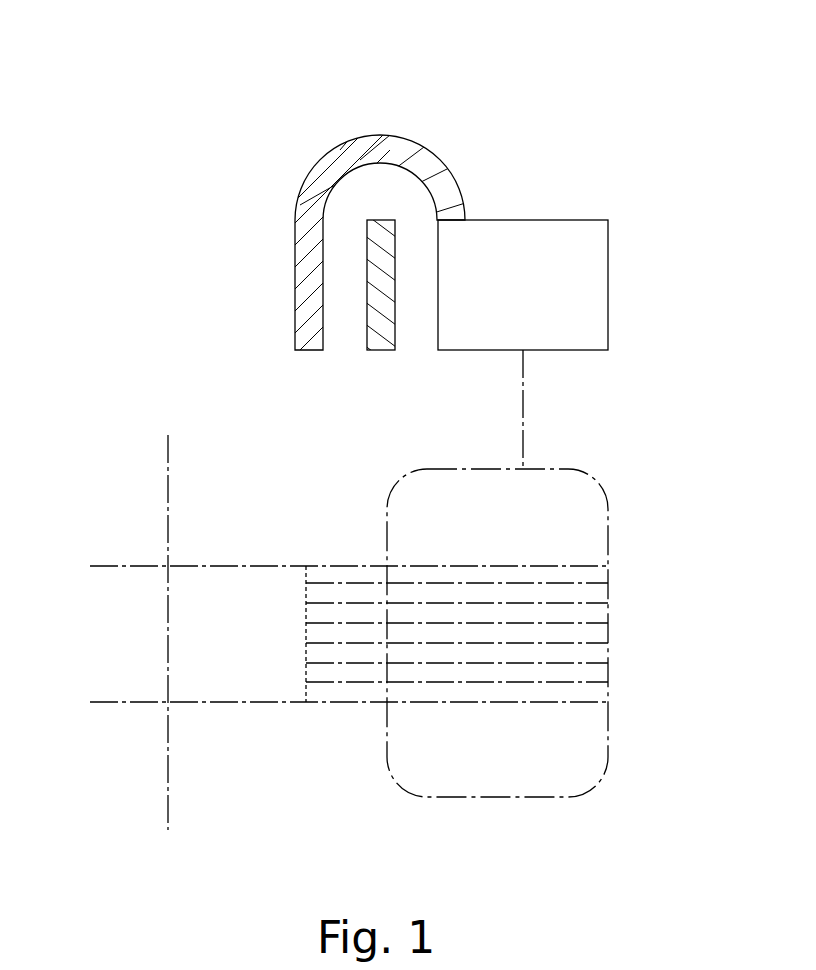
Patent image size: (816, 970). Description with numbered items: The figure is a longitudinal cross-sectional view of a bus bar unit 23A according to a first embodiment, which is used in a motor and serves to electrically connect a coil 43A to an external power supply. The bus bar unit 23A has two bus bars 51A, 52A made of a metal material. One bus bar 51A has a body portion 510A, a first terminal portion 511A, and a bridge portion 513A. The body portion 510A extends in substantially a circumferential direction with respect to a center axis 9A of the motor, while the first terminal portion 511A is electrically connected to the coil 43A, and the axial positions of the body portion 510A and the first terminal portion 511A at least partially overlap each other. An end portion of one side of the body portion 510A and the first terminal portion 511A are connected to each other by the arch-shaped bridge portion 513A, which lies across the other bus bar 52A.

The bus bar unit 23A is at (490, 108).
The bus bar 51A is at (288, 163).
The body portion 510A is at (308, 283).
The bridge portion 513A is at (380, 162).
The bus bar 52A is at (380, 330).
The first terminal portion 511A is at (553, 250).
The coil 43A is at (545, 512).
The center axis 9A is at (168, 470).